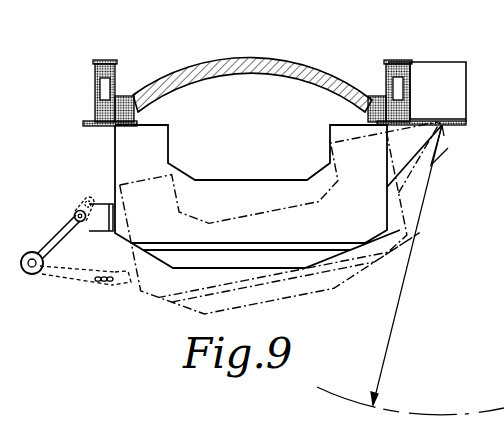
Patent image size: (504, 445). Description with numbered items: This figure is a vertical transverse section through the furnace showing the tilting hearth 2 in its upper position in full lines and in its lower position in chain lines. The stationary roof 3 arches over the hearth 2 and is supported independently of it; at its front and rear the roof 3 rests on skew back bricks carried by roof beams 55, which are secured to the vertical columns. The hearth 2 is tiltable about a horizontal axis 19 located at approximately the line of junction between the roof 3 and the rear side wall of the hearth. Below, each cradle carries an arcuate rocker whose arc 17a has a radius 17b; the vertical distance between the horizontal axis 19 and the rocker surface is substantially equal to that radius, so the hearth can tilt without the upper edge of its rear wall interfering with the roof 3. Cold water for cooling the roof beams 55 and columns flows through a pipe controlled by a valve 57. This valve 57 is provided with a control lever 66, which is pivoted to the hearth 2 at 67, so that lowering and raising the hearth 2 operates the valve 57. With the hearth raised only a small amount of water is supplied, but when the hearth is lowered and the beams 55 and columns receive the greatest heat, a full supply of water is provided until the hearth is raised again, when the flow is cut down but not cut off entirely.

The stationary roof 3 is at (253, 60).
The roof beams 55 is at (97, 65).
The horizontal axis 19 is at (444, 126).
The tilting hearth 2 is at (245, 185).
The pivot 67 is at (75, 214).
The control lever 66 is at (58, 238).
The valve 57 is at (28, 276).
The radius of arc 17b is at (390, 341).
The arc of rocker 17a is at (449, 417).